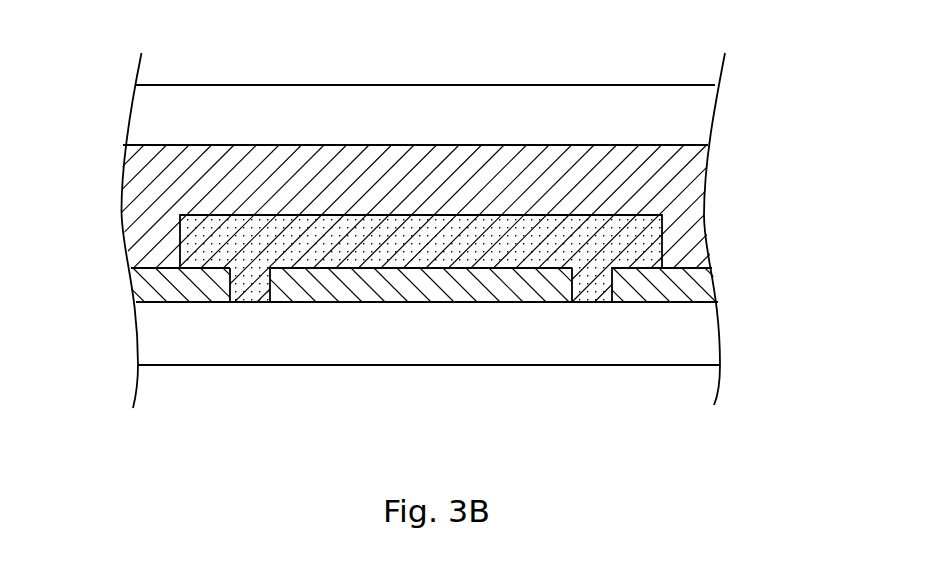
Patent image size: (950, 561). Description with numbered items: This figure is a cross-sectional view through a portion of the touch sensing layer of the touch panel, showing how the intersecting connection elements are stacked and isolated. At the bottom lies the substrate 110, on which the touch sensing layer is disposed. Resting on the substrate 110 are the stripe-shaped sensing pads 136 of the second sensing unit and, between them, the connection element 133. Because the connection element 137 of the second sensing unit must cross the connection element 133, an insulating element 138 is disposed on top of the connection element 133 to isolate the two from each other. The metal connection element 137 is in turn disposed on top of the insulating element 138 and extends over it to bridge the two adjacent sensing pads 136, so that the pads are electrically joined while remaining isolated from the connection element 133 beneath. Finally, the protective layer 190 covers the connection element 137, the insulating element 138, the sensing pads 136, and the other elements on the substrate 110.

The protective layer 190 is at (697, 120).
The connection element 137 is at (700, 220).
The insulating element 138 is at (593, 287).
The sensing pad 136 is at (165, 290).
The connection element 133 is at (438, 288).
The substrate 110 is at (697, 336).